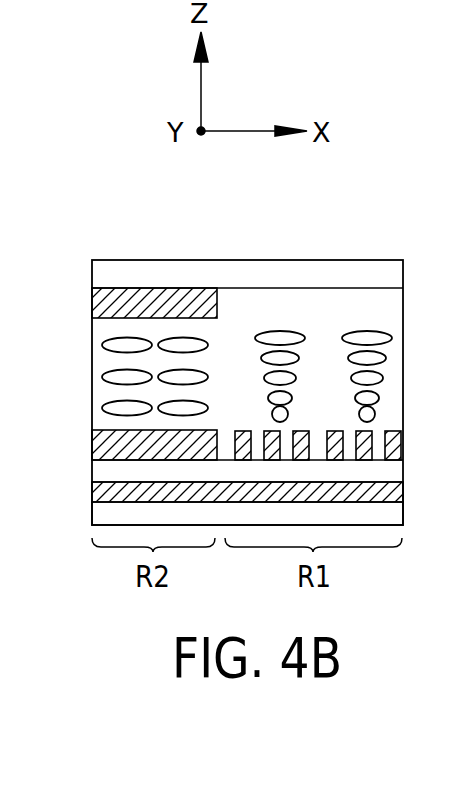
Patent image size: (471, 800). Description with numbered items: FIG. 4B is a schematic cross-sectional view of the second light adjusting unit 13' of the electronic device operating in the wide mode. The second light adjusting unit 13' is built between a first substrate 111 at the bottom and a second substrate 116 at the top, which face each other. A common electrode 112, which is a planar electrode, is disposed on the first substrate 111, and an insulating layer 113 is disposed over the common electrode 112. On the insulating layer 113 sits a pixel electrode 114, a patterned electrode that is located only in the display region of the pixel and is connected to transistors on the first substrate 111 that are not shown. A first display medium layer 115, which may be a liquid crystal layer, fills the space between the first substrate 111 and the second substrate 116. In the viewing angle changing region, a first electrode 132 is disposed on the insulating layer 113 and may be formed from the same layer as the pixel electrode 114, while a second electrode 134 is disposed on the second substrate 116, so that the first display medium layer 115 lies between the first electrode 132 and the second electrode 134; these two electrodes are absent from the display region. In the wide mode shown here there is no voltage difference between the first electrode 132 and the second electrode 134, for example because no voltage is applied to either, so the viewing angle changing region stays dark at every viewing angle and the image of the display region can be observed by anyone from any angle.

The second light adjusting unit 13' is at (278, 339).
The first substrate 111 is at (393, 512).
The common electrode 112 is at (397, 490).
The insulating layer 113 is at (393, 471).
The pixel electrode 114 is at (397, 447).
The first display medium layer 115 is at (400, 378).
The second substrate 116 is at (400, 272).
The first electrode 132 is at (99, 448).
The second electrode 134 is at (99, 305).